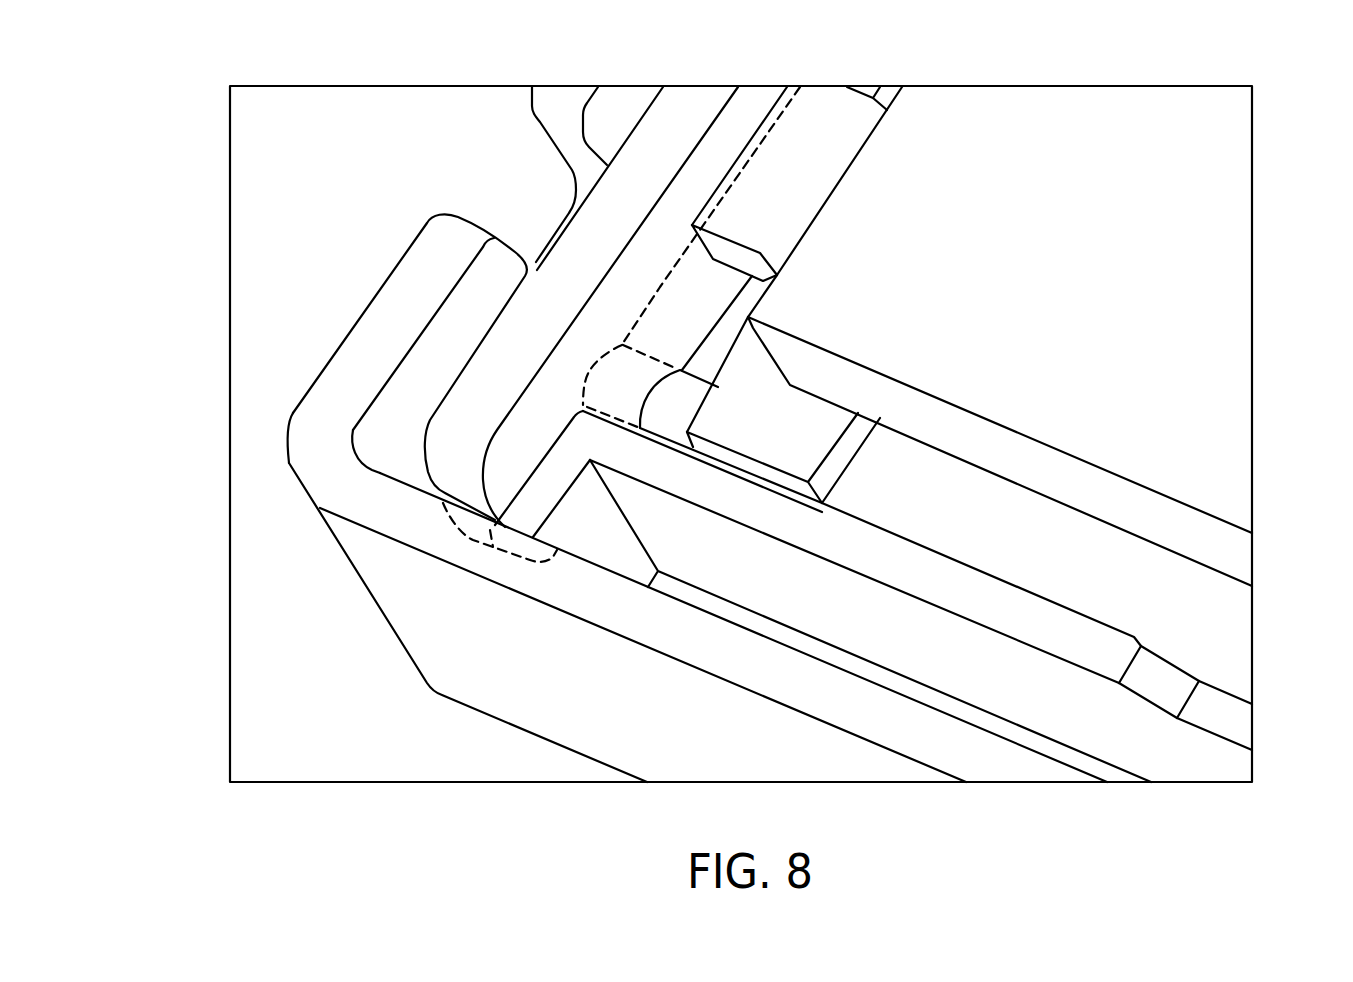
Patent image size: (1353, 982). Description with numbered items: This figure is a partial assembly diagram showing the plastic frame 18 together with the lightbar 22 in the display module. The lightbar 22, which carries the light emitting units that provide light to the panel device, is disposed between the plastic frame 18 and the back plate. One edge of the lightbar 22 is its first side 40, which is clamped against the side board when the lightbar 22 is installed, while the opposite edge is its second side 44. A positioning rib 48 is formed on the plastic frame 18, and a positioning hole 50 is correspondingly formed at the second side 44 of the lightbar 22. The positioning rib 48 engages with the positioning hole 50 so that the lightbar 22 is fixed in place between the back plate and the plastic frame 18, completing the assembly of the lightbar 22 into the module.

The plastic frame 18 is at (366, 347).
The lightbar 22 is at (669, 128).
The first side 40 is at (748, 100).
The second side 44 is at (698, 318).
The positioning rib 48 is at (668, 413).
The positioning hole 50 is at (621, 400).